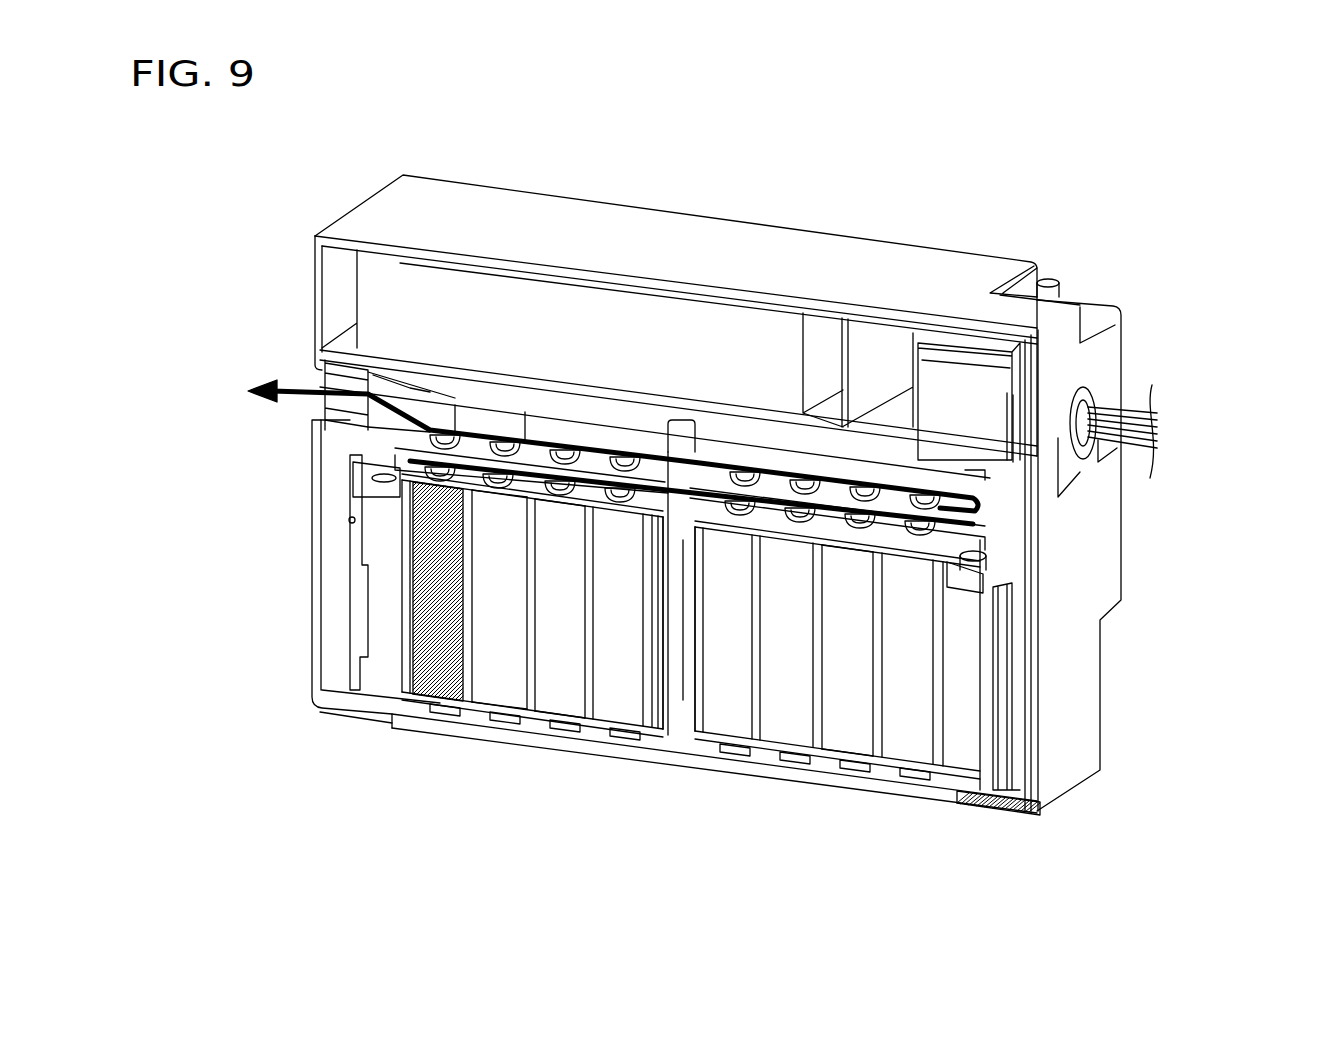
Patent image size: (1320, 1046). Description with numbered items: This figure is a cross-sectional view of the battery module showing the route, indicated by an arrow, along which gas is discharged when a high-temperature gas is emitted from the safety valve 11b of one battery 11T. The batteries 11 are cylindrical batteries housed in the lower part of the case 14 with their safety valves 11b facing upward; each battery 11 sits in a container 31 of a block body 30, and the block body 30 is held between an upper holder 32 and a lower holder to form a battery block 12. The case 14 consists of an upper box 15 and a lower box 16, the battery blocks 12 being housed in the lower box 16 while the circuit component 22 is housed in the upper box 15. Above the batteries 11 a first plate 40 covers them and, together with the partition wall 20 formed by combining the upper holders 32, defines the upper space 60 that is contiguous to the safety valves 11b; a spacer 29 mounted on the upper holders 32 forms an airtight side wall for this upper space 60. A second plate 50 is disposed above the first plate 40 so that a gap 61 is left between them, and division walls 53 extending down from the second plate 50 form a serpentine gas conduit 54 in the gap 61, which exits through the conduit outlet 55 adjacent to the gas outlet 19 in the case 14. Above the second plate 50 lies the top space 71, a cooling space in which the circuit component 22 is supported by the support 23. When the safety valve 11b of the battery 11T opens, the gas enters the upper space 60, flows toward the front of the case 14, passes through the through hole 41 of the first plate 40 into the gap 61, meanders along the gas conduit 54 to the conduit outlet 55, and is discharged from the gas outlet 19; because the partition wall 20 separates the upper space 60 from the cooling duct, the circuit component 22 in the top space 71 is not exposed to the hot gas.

The battery 11 is at (570, 690).
The battery 11T is at (445, 690).
The safety valve 11b is at (353, 512).
The battery block 12 is at (367, 607).
The case 14 is at (1230, 345).
The upper box 15 is at (1110, 366).
The lower box 16 is at (1110, 498).
The gas outlet 19 is at (312, 377).
The partition wall 20 is at (670, 634).
The circuit component 22 is at (637, 312).
The support 23 is at (600, 395).
The spacer 29 is at (353, 443).
The block body 30 is at (547, 648).
The container 31 is at (567, 690).
The upper holder 32 is at (681, 436).
The first plate 40 is at (433, 405).
The through hole 41 is at (968, 470).
The second plate 50 is at (515, 408).
The division wall 53 is at (763, 460).
The gas conduit 54 is at (723, 462).
The conduit outlet 55 is at (307, 404).
The upper space 60 is at (803, 547).
The gap 61 is at (867, 547).
The top space 71 is at (888, 428).